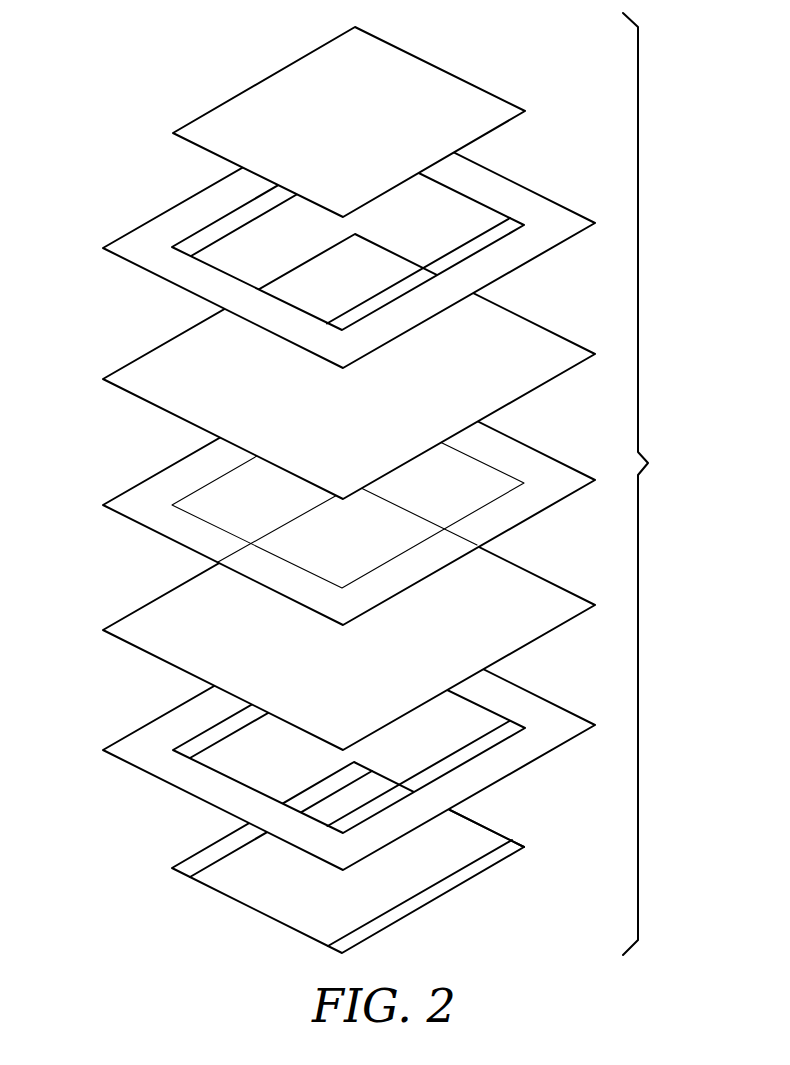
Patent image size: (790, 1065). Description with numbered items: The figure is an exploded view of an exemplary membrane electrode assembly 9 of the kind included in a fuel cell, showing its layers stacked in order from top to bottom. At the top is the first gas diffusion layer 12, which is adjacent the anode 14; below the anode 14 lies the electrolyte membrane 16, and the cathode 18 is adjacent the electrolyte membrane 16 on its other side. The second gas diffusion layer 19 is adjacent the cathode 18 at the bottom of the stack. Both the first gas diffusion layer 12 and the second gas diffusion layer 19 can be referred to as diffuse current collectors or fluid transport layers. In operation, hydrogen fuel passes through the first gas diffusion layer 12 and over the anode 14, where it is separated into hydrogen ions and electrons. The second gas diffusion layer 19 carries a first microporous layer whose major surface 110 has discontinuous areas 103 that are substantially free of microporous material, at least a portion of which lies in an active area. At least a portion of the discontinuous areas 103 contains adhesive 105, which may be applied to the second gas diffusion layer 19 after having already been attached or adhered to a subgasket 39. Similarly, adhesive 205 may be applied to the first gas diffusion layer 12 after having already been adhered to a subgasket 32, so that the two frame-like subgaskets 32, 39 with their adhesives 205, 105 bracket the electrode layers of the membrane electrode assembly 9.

The membrane electrode assembly 9 is at (645, 484).
The first gas diffusion layer 12 is at (437, 88).
The anode 14 is at (557, 350).
The electrolyte membrane 16 is at (563, 475).
The cathode 18 is at (548, 600).
The second gas diffusion layer 19 is at (498, 865).
The subgasket 32 is at (553, 225).
The subgasket 39 is at (562, 730).
The discontinuous areas 103 is at (343, 937).
The adhesive 105 is at (500, 733).
The major surface 110 is at (465, 842).
The adhesive 205 is at (485, 242).